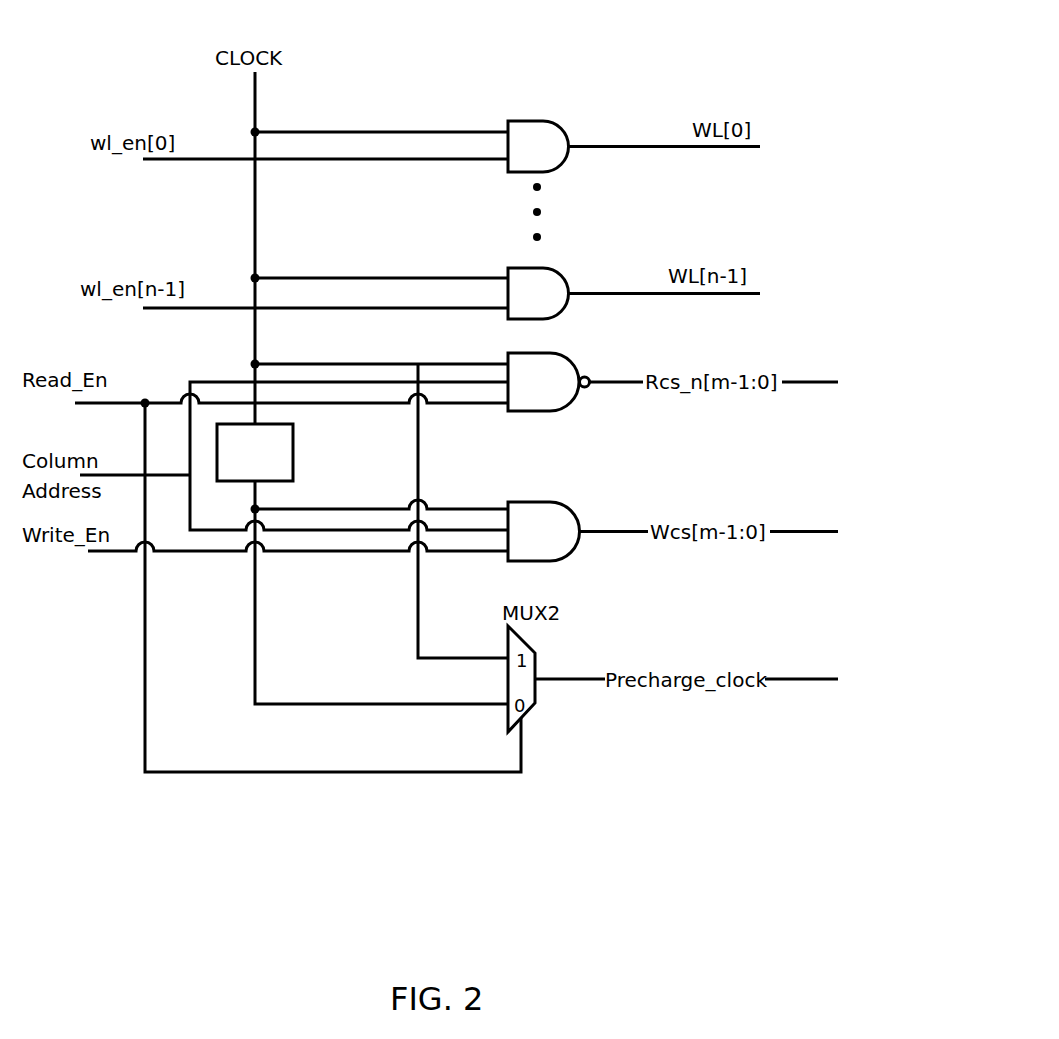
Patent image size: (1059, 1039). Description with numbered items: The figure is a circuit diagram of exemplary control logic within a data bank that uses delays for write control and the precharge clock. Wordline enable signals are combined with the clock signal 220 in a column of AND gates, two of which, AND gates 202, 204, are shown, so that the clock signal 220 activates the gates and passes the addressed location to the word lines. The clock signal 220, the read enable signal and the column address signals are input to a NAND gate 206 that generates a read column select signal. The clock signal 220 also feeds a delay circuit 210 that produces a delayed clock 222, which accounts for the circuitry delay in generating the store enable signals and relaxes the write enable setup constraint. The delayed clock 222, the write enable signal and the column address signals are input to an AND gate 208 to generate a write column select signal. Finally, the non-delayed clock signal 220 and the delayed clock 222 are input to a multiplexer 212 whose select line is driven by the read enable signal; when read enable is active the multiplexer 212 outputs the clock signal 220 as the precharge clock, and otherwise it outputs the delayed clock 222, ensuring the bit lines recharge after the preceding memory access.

The AND gate 202 is at (556, 122).
The AND gate 204 is at (556, 269).
The NAND gate 206 is at (542, 353).
The AND gate 208 is at (542, 502).
The delay circuit 210 is at (293, 447).
The multiplexer 212 is at (537, 657).
The clock signal 220 is at (255, 112).
The delayed clock 222 is at (255, 642).